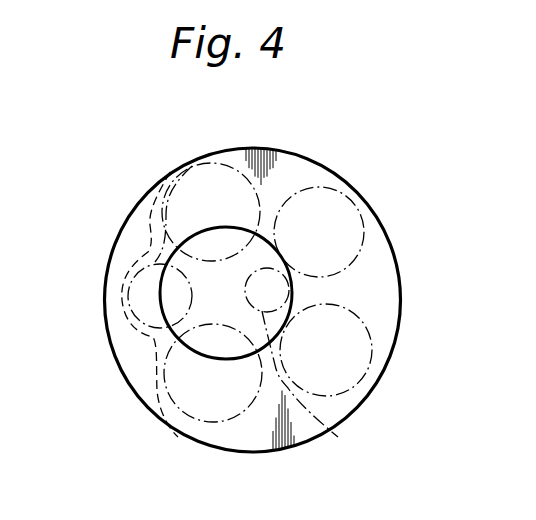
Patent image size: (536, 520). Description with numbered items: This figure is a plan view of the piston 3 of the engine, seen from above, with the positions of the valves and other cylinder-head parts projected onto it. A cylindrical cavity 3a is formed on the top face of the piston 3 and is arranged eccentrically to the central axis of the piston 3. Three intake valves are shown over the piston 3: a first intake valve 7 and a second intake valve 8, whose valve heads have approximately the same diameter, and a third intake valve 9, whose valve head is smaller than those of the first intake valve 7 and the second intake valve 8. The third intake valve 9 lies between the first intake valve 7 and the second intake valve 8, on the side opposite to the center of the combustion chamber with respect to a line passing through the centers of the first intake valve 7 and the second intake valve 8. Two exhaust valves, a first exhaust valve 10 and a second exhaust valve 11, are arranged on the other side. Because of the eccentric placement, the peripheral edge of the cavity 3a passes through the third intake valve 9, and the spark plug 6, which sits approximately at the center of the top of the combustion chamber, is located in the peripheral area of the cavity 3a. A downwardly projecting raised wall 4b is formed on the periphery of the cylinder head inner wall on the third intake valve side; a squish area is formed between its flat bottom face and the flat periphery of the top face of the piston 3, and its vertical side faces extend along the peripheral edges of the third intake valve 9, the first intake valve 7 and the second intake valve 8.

The piston 3 is at (384, 292).
The cylindrical cavity 3a is at (197, 348).
The raised wall 4b is at (130, 226).
The spark plug 6 is at (325, 422).
The first intake valve 7 is at (214, 174).
The second intake valve 8 is at (216, 405).
The third intake valve 9 is at (133, 294).
The first exhaust valve 10 is at (338, 208).
The second exhaust valve 11 is at (353, 357).